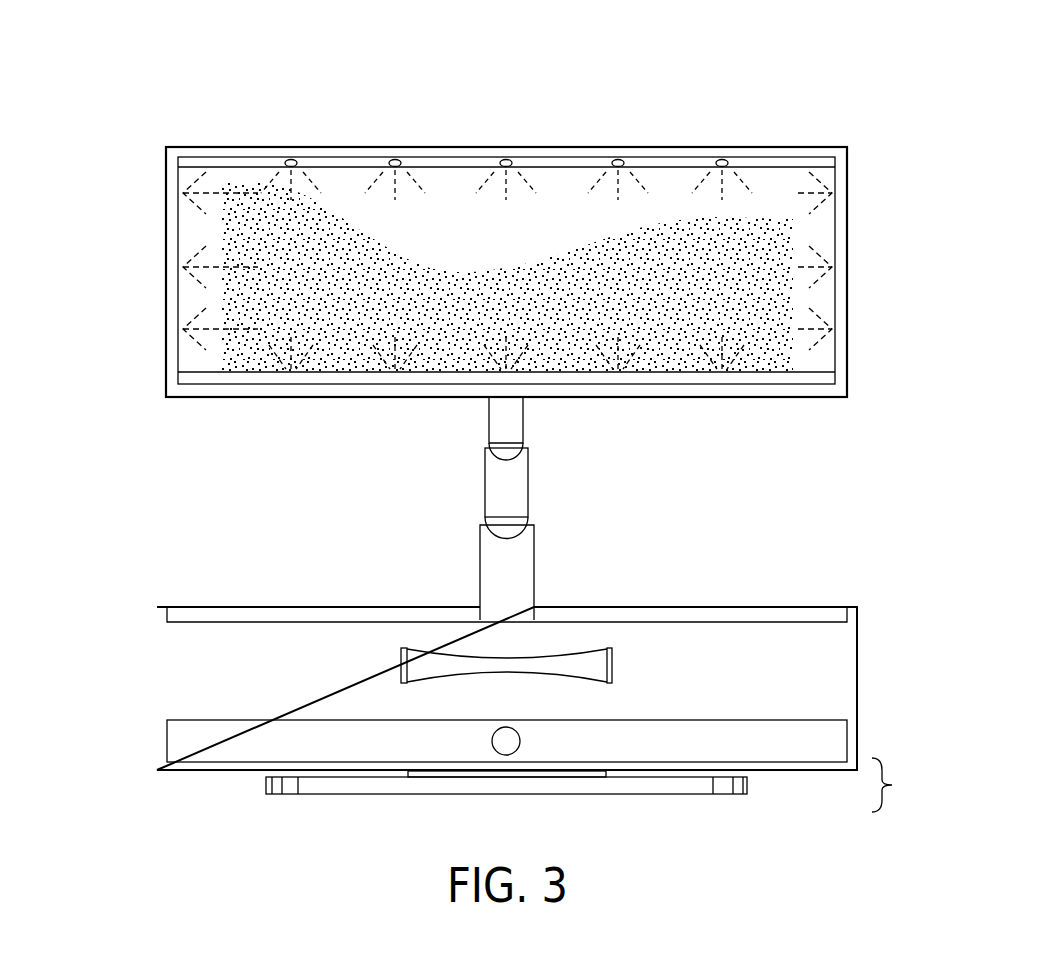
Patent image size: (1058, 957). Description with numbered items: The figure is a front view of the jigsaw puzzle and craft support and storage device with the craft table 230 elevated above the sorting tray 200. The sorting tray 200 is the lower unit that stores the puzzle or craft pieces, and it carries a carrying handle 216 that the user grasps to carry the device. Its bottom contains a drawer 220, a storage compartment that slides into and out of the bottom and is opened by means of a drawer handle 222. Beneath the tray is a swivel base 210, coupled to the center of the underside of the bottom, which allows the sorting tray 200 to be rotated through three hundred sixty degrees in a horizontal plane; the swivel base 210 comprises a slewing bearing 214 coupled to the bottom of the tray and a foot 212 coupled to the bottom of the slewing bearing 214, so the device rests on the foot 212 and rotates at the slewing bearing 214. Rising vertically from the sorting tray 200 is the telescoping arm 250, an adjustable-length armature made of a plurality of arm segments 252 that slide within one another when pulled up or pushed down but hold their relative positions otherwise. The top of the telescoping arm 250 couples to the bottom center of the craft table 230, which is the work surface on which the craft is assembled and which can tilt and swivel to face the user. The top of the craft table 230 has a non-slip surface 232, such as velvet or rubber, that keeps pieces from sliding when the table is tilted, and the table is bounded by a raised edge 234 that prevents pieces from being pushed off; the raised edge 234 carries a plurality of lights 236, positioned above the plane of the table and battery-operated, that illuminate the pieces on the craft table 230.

The sorting tray 200 is at (157, 668).
The swivel base 210 is at (916, 785).
The foot 212 is at (337, 795).
The slewing bearing 214 is at (410, 778).
The carrying handle 216 is at (610, 663).
The drawer 220 is at (187, 743).
The drawer handle 222 is at (520, 740).
The craft table 230 is at (848, 198).
The non-slip surface 232 is at (210, 242).
The raised edge 234 is at (670, 156).
The plurality of lights 236 is at (506, 160).
The telescoping arm 250 is at (530, 480).
The plurality of arm segments 252 is at (482, 575).